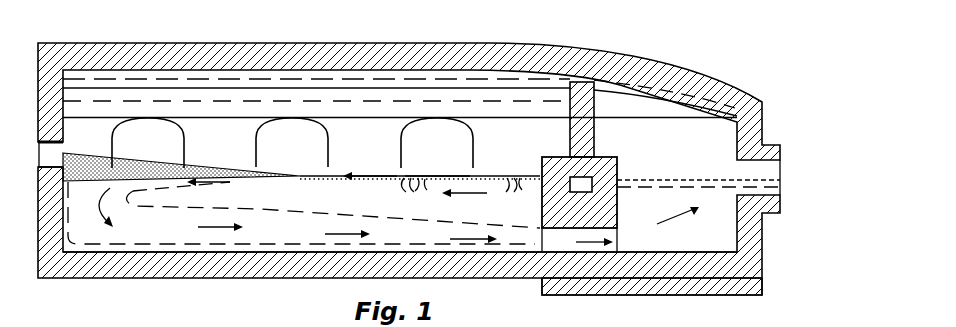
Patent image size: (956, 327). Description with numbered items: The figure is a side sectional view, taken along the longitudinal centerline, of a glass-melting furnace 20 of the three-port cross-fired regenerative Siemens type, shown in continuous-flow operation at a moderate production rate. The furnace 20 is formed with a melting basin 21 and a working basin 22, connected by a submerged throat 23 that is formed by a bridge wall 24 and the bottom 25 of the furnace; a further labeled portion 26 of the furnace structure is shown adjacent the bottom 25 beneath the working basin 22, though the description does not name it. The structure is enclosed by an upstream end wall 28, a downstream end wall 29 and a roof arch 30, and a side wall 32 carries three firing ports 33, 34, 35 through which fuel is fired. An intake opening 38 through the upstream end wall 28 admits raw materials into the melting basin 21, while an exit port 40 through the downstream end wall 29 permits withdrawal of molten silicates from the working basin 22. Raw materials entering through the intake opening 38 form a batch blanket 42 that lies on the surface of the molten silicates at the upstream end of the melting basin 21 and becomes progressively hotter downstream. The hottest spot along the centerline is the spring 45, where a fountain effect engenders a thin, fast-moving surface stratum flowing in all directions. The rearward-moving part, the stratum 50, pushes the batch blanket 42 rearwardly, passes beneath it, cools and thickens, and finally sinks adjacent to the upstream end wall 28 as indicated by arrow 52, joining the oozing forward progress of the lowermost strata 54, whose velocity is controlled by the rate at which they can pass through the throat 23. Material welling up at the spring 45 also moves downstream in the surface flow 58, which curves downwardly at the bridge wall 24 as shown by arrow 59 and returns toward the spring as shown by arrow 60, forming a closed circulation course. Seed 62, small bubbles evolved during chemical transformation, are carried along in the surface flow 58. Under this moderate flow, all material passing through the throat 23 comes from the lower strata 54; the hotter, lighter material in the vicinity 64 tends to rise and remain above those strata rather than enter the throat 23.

The furnace 20 is at (479, 40).
The melting basin 21 is at (243, 257).
The working basin 22 is at (672, 258).
The throat 23 is at (582, 258).
The bridge wall 24 is at (615, 157).
The bottom 25 is at (520, 274).
The bottom wall layer 26 is at (603, 290).
The upstream end wall 28 is at (38, 248).
The downstream end wall 29 is at (742, 231).
The roof arch 30 is at (334, 52).
The side wall 32 is at (384, 135).
The firing port 33 is at (170, 138).
The firing port 34 is at (271, 150).
The firing port 35 is at (456, 134).
The intake opening 38 is at (57, 150).
The exit port 40 is at (737, 164).
The batch blanket 42 is at (105, 172).
The spring 45 is at (414, 177).
The stratum 50 is at (361, 162).
The arrow 52 is at (100, 209).
The lowermost strata 54 is at (330, 232).
The surface flow 58 is at (476, 176).
The arrow 59 is at (518, 178).
The arrow 60 is at (462, 197).
The seed 62 is at (433, 176).
The vicinity 64 is at (498, 212).